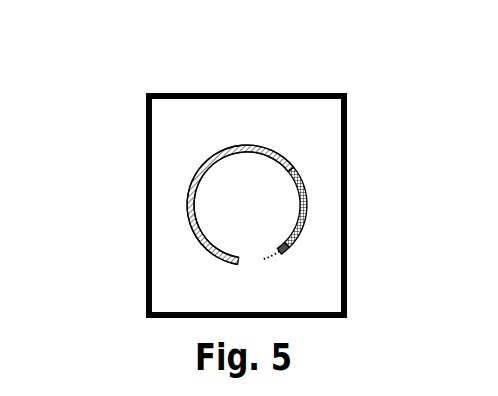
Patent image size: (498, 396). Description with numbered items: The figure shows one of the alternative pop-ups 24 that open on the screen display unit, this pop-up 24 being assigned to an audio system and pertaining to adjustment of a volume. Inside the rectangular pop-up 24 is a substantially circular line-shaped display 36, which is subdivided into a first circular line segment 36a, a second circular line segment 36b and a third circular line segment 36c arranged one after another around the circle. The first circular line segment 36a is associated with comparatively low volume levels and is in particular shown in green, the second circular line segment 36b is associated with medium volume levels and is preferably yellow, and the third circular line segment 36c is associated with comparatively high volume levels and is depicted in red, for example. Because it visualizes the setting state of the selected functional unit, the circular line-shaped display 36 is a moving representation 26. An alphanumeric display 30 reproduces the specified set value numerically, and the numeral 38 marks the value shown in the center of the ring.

The pop-up 24 is at (147, 108).
The moving representation 26 is at (187, 158).
The alphanumeric display 30 is at (246, 192).
The circular line-shaped display 36 is at (180, 218).
The first circular line segment 36a is at (188, 208).
The second circular line segment 36b is at (307, 205).
The third circular line segment 36c is at (281, 251).
The central region 38 is at (246, 209).